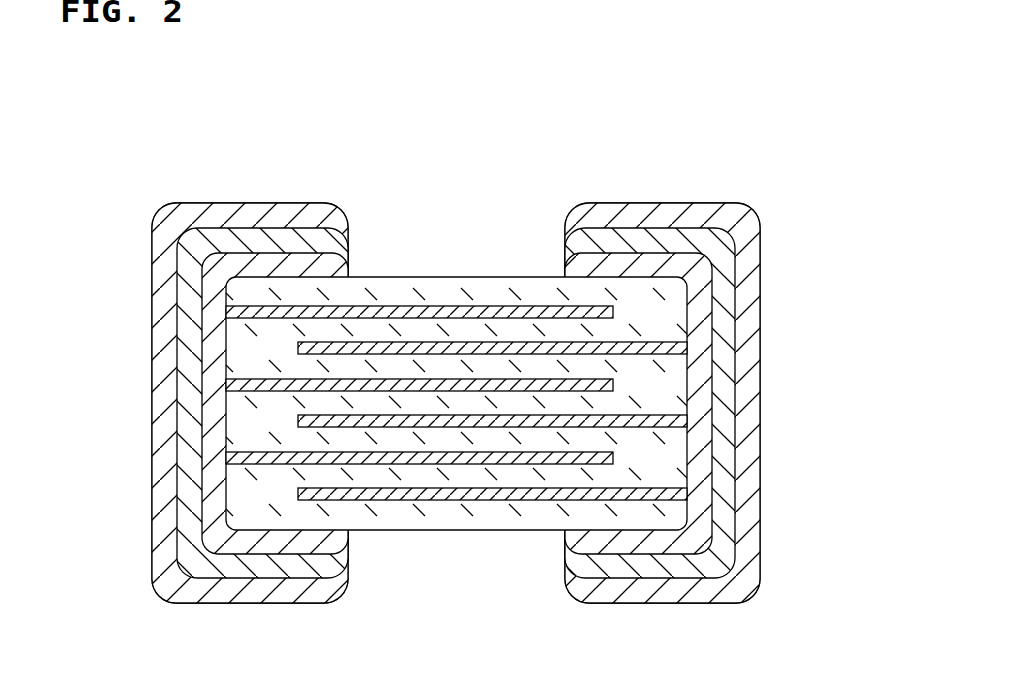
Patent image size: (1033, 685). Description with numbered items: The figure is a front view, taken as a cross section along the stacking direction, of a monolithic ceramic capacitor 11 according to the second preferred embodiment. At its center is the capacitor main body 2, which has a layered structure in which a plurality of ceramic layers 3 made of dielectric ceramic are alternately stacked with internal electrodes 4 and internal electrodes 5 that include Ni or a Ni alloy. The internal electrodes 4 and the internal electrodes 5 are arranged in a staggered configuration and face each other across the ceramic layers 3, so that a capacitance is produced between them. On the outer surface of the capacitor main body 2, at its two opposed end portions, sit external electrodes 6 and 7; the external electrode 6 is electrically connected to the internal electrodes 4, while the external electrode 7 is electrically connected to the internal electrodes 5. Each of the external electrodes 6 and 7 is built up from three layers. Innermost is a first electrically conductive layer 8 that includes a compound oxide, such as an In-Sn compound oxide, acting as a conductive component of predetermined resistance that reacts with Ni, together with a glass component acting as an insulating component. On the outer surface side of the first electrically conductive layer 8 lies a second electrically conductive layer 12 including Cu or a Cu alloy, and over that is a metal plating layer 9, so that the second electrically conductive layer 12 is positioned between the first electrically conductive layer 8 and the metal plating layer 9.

The monolithic ceramic capacitor 11 is at (143, 121).
The capacitor main body 2 is at (487, 274).
The ceramic layer 3 is at (455, 443).
The internal electrode 4 is at (438, 380).
The internal electrode 5 is at (537, 423).
The external electrode 6 is at (62, 332).
The external electrode 7 is at (852, 342).
The first electrically conductive layer 8 is at (208, 352).
The second electrically conductive layer 12 is at (183, 399).
The metal plating layer 9 is at (160, 458).